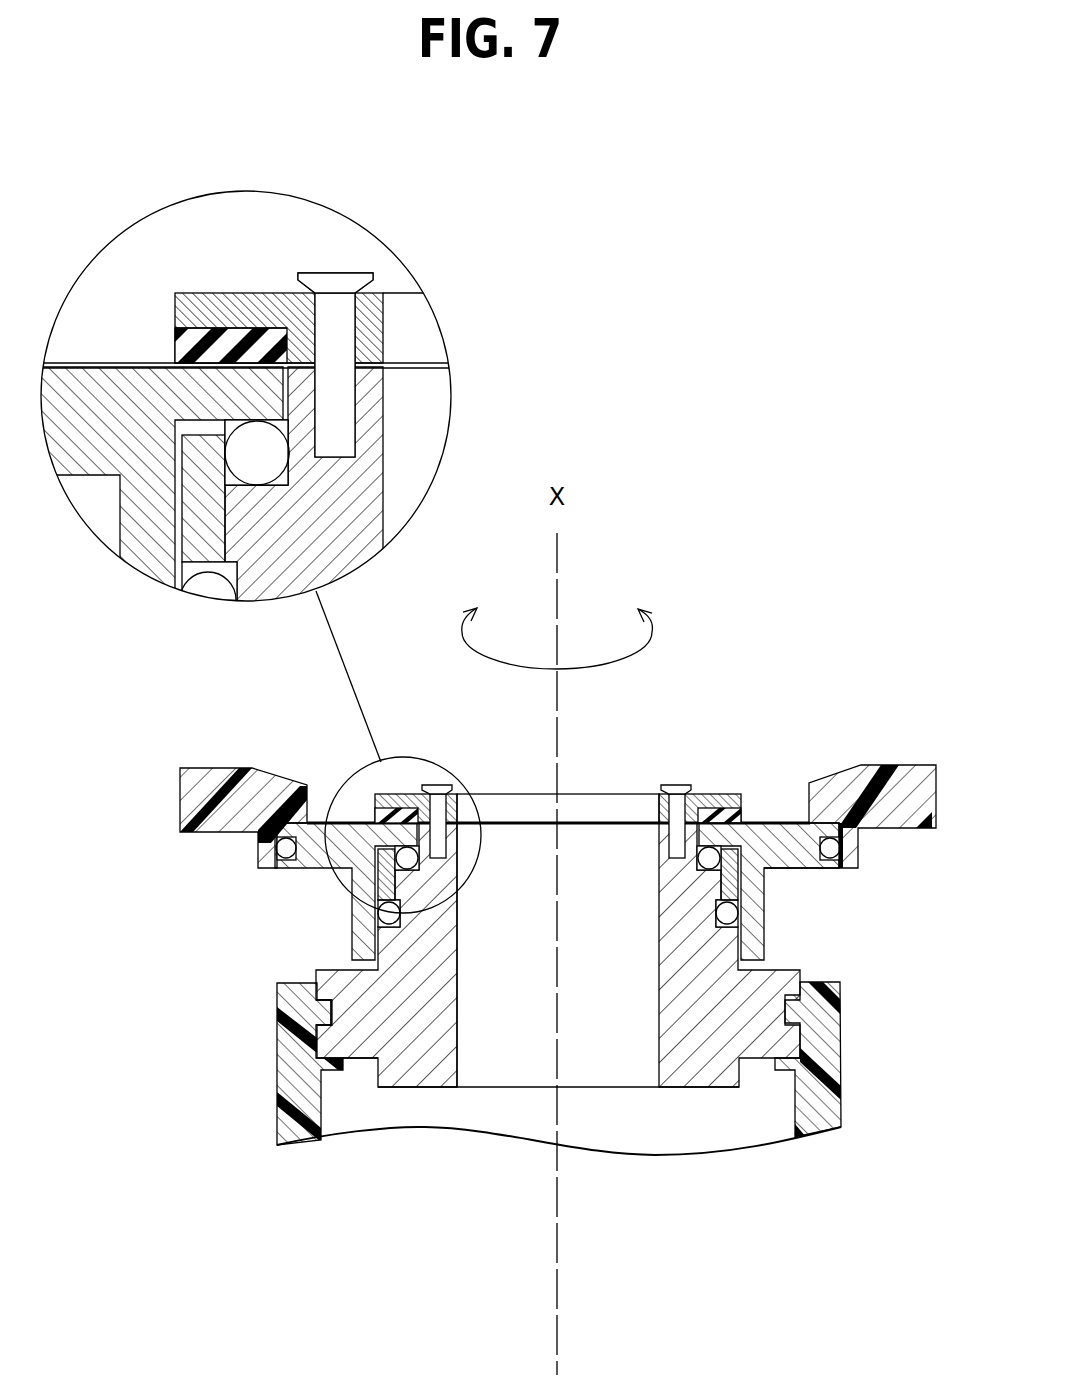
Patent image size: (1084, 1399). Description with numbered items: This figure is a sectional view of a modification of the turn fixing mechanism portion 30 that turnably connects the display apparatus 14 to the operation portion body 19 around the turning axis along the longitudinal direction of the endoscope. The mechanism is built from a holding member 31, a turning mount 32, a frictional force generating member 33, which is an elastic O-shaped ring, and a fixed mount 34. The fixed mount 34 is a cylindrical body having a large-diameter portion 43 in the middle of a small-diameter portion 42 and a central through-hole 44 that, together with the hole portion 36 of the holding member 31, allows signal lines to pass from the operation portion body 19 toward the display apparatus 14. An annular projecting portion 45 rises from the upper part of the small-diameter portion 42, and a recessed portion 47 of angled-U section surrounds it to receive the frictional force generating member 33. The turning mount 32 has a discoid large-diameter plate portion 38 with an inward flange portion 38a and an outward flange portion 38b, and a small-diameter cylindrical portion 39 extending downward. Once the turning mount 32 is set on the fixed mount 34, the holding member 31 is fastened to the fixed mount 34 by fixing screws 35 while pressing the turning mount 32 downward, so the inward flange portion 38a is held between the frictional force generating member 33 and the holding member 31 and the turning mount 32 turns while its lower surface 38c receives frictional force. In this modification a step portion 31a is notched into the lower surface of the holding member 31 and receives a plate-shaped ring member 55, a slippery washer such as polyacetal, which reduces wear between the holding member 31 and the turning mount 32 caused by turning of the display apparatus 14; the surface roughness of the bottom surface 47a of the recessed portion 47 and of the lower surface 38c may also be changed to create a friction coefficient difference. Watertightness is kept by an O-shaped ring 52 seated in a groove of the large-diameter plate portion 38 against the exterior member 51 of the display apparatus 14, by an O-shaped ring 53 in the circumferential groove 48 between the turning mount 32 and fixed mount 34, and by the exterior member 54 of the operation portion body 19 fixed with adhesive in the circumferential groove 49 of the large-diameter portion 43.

The display apparatus 14 is at (795, 747).
The operation portion body 19 is at (796, 1182).
The turn fixing mechanism portion 30 is at (455, 678).
The holding member 31 is at (483, 794).
The step portion 31a is at (213, 324).
The turning mount 32 is at (223, 631).
The frictional force generating member 33 is at (401, 840).
The fixed mount 34 is at (375, 1002).
The fixing screw 35 is at (437, 784).
The hole portion 36 is at (637, 803).
The large-diameter plate portion 38 is at (779, 823).
The inward flange portion 38a is at (724, 830).
The outward flange portion 38b is at (813, 866).
The lower surface 38c is at (277, 434).
The small-diameter cylindrical portion 39 is at (765, 937).
The small-diameter portion 42 is at (393, 948).
The large-diameter portion 43 is at (357, 1063).
The through-hole 44 is at (468, 1077).
The projecting portion 45 is at (517, 820).
The recessed portion 47 is at (356, 830).
The bottom surface 47a is at (276, 476).
The circumferential groove 48 is at (386, 920).
The circumferential groove 49 is at (331, 1011).
The exterior member 51 is at (211, 767).
The O-shaped ring 52 is at (279, 850).
The O-shaped ring 53 is at (362, 893).
The exterior member 54 is at (277, 1065).
The plate-shaped ring member 55 is at (712, 816).